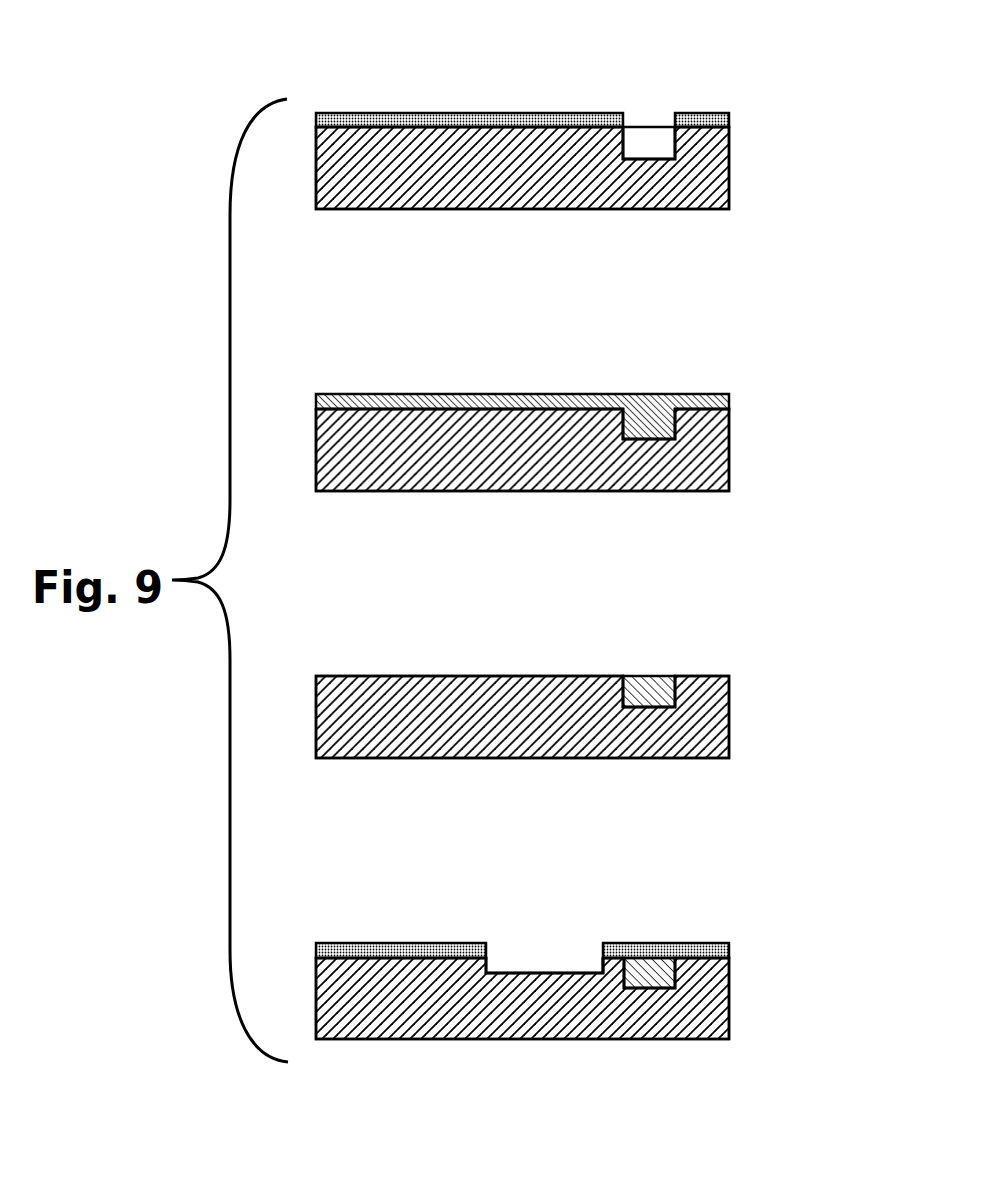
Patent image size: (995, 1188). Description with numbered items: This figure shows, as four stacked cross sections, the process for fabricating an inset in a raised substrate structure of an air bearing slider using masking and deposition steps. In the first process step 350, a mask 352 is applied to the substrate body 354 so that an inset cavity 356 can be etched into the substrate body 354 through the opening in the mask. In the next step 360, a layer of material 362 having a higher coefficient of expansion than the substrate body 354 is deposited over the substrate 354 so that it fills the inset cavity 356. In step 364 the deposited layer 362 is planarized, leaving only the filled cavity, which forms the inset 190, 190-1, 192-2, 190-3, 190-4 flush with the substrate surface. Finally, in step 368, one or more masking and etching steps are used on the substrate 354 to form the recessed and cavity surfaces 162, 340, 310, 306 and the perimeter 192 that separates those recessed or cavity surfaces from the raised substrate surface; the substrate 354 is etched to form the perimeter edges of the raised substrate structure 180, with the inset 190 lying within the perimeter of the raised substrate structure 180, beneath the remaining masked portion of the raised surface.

The process step 350 is at (584, 120).
The mask 352 is at (481, 112).
The substrate body 354 is at (710, 190).
The inset cavity 356 is at (642, 150).
The step 360 is at (584, 399).
The layer of material 362 is at (680, 403).
The step 364 is at (584, 848).
The step 368 is at (583, 935).
The inset 190 is at (643, 848).
The inset 190-1 is at (643, 848).
The alignment mark 192-2 is at (643, 848).
The inset 190-3 is at (643, 848).
The inset 190-4 is at (652, 1082).
The recessed surface 162 is at (518, 902).
The cavity surface 340 is at (518, 902).
The cavity surface 310 is at (518, 902).
The cavity surface 306 is at (521, 955).
The perimeter 192 is at (597, 962).
The raised substrate structure 180 is at (738, 952).